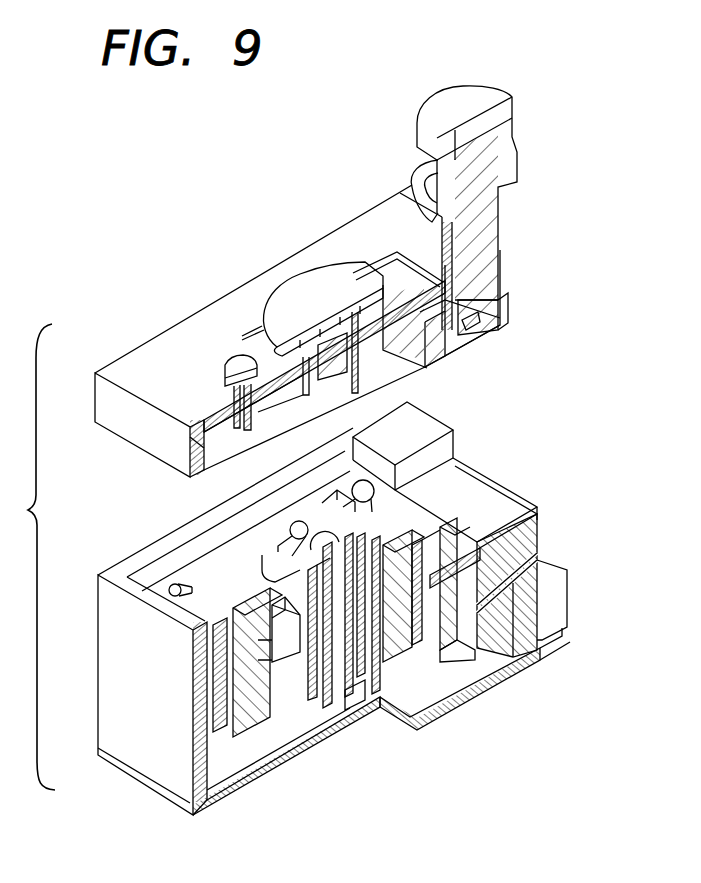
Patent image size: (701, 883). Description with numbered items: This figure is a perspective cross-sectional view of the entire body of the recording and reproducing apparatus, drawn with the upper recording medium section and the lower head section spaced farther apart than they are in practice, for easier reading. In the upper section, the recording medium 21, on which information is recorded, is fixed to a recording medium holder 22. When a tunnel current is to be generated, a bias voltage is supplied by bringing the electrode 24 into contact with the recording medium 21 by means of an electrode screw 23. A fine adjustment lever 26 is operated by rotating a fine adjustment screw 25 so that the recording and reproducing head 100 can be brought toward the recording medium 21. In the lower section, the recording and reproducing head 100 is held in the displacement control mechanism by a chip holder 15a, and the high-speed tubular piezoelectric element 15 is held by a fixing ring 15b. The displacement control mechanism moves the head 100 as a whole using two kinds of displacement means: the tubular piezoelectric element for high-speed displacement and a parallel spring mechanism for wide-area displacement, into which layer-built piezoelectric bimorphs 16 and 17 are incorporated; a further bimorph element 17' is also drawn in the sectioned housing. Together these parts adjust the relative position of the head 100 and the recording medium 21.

The recording medium 21 is at (300, 392).
The recording medium holder 22 is at (470, 318).
The electrode screw 23 is at (226, 362).
The electrode 24 is at (277, 413).
The fine adjustment screw 25 is at (459, 90).
The fine adjustment lever 26 is at (375, 268).
The recording and reproducing head 100 is at (350, 555).
The high-speed tubular piezoelectric element 15 is at (470, 555).
The chip holder 15a is at (370, 568).
The fixing ring 15b is at (360, 677).
The layer-built piezoelectric bimorph 16 is at (208, 585).
The layer-built piezoelectric bimorph 17 is at (256, 711).
The contact element 17' is at (482, 682).